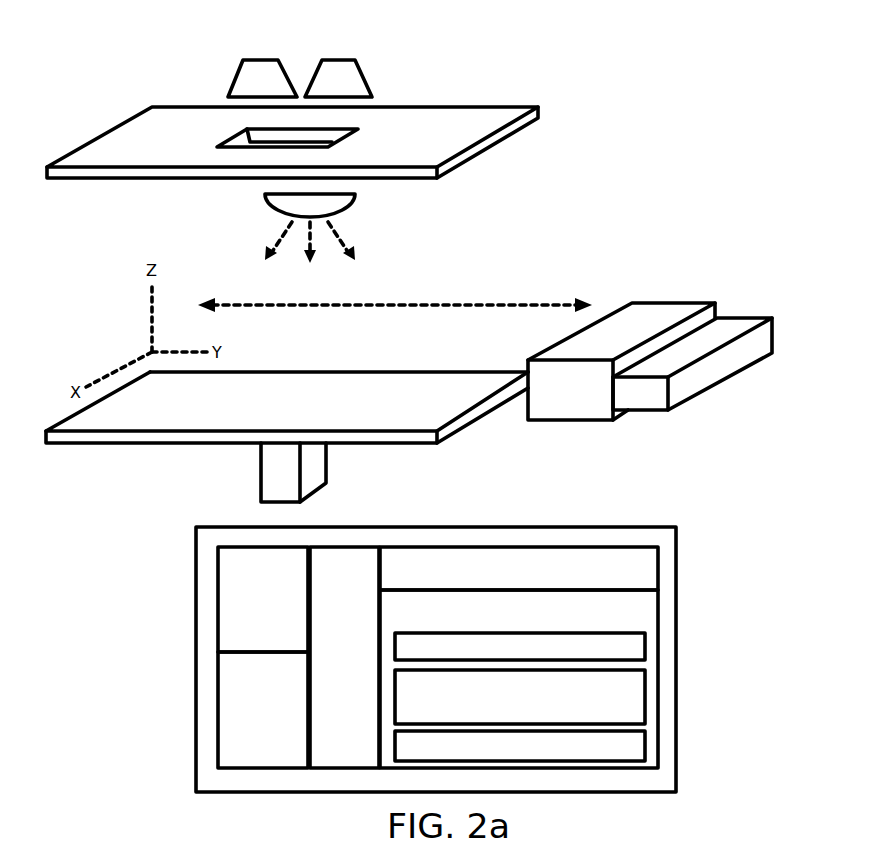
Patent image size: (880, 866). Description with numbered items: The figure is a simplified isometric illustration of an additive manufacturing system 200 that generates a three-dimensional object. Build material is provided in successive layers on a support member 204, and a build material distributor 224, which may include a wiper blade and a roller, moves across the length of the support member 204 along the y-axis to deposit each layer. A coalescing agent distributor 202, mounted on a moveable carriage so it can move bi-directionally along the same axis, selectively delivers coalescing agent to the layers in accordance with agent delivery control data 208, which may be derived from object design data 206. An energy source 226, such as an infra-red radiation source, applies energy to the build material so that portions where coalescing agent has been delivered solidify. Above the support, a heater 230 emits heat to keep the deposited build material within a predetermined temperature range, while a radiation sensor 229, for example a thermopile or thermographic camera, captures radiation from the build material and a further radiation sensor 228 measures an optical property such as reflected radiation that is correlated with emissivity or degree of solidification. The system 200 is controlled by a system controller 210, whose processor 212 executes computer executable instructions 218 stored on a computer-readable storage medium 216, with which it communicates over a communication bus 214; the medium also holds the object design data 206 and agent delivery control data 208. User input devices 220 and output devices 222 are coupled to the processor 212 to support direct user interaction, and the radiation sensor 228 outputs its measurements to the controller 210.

The additive manufacturing system 200 is at (679, 45).
The coalescing agent distributor 202 is at (720, 318).
The support member 204 is at (397, 372).
The object design data 206 is at (623, 755).
The agent delivery control data 208 is at (595, 720).
The system controller 210 is at (195, 780).
The processor 212 is at (580, 578).
The communication bus 214 is at (357, 683).
The computer-readable storage medium 216 is at (658, 655).
The computer executable instructions 218 is at (591, 656).
The user input devices 220 is at (277, 735).
The output devices 222 is at (277, 623).
The build material distributor 224 is at (635, 303).
The energy source 226 is at (355, 200).
The radiation sensor 228 is at (275, 58).
The radiation sensor 229 is at (350, 58).
The heater 230 is at (462, 106).